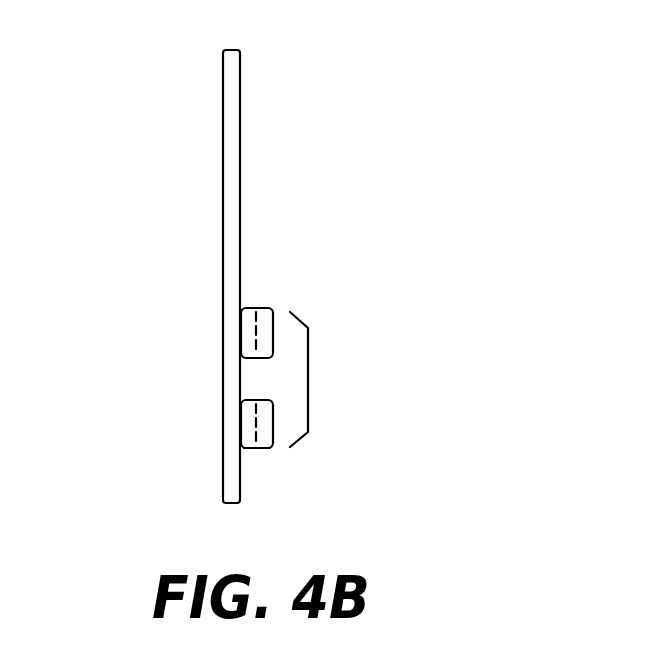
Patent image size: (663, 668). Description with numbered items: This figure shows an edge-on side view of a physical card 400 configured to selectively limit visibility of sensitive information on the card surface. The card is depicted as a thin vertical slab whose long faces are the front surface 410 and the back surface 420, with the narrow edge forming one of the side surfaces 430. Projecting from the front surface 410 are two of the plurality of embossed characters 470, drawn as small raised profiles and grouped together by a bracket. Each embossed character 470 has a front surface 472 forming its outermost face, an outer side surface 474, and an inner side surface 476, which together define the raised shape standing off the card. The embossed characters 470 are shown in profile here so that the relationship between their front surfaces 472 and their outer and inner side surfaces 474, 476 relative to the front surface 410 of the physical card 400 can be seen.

The physical card 400 is at (380, 81).
The front surface 410 is at (240, 218).
The back surface 420 is at (223, 197).
The side surface 430 is at (233, 128).
The embossed characters 470 is at (308, 370).
The front surface of embossed character 472 is at (255, 428).
The outer side surface of embossed character 474 is at (247, 450).
The inner side surface of embossed character 476 is at (262, 314).